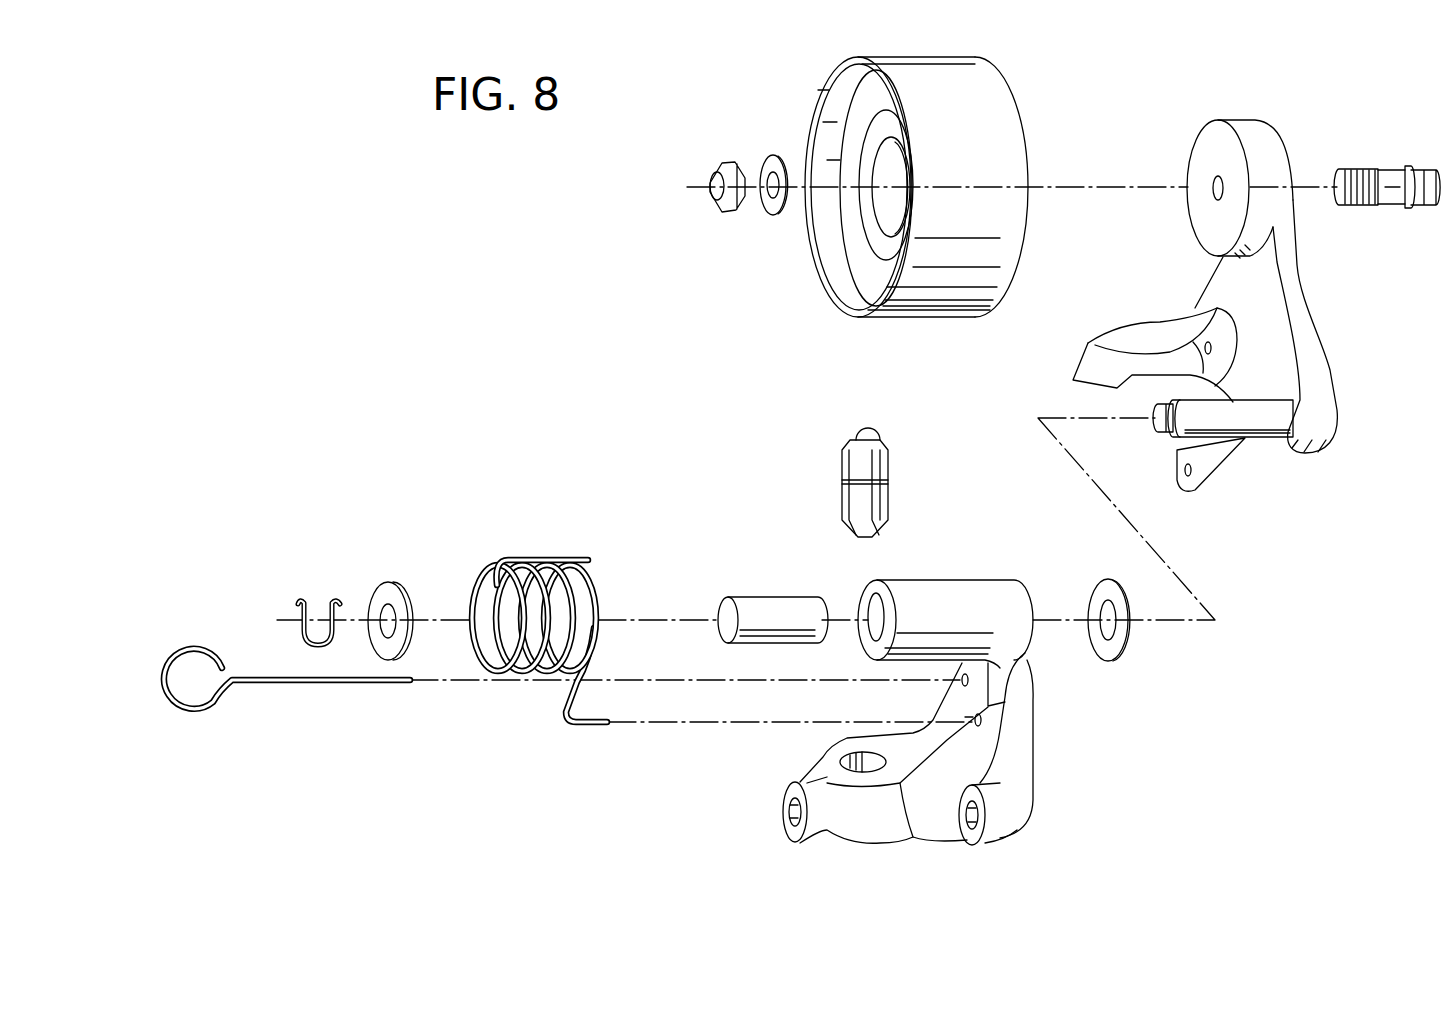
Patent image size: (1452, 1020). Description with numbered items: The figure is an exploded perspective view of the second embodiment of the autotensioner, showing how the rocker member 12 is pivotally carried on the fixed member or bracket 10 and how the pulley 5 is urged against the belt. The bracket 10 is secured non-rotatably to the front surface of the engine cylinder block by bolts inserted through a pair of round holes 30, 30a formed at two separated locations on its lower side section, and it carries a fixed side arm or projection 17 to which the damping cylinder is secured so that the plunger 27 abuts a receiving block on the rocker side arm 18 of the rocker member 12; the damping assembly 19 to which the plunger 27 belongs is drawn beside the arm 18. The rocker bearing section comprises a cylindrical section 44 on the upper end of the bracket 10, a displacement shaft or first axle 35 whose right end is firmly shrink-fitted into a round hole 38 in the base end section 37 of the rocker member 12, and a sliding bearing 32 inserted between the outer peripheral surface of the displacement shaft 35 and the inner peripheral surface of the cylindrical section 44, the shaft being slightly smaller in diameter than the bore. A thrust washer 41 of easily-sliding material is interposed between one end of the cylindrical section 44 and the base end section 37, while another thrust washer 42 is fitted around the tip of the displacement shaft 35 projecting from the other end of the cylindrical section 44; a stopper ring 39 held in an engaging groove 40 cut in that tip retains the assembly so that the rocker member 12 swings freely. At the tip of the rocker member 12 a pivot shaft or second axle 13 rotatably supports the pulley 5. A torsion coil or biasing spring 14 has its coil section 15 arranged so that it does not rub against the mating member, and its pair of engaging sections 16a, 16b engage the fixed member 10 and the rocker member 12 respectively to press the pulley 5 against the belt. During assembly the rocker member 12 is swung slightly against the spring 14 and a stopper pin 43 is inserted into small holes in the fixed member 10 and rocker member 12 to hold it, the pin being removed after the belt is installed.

The pulley 5 is at (1017, 120).
The fixed member or bracket 10 is at (901, 712).
The rocker member 12 is at (1281, 286).
The pivot shaft or second axle 13 is at (1390, 178).
The torsion coil spring 14 is at (545, 645).
The coil section 15 is at (533, 668).
The engaging section 16a is at (600, 724).
The engaging section 16b is at (573, 557).
The fixed side arm or projection 17 is at (888, 838).
The rocker side arm 18 is at (1140, 330).
The damping member 19 is at (899, 477).
The plunger 27 is at (883, 433).
The round hole 30 is at (982, 827).
The round hole 30a is at (783, 828).
The sliding bearing 32 is at (735, 645).
The displacement shaft or first axle 35 is at (1213, 457).
The base end section 37 is at (1307, 327).
The round hole 38 is at (870, 598).
The stopper ring 39 is at (305, 600).
The engaging groove 40 is at (1172, 436).
The thrust washer 41 is at (1124, 660).
The thrust washer 42 is at (388, 582).
The stopper pin 43 is at (333, 684).
The cylindrical section 44 is at (923, 599).